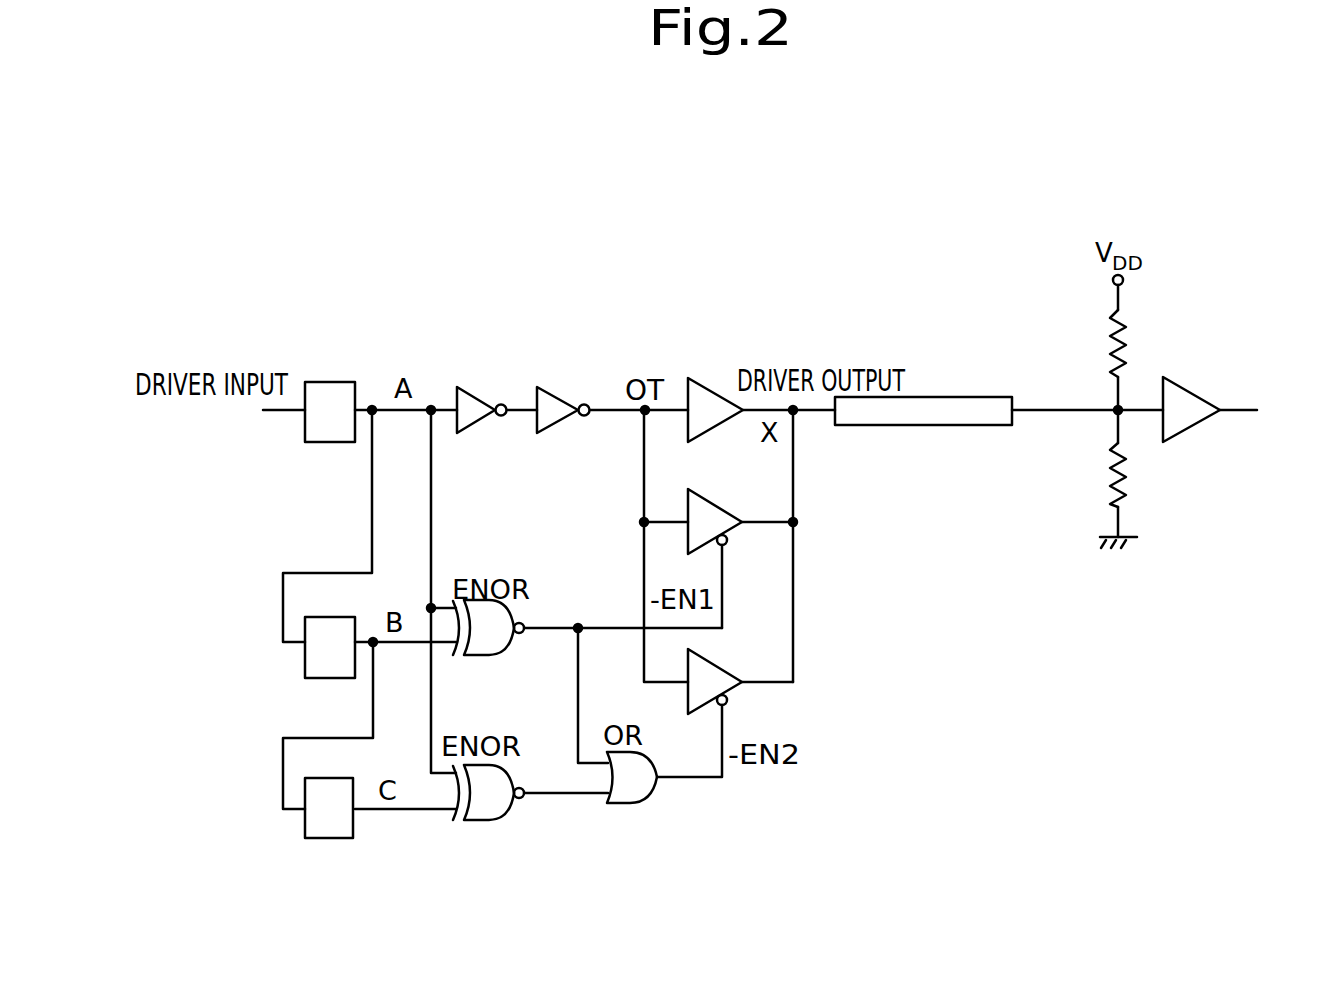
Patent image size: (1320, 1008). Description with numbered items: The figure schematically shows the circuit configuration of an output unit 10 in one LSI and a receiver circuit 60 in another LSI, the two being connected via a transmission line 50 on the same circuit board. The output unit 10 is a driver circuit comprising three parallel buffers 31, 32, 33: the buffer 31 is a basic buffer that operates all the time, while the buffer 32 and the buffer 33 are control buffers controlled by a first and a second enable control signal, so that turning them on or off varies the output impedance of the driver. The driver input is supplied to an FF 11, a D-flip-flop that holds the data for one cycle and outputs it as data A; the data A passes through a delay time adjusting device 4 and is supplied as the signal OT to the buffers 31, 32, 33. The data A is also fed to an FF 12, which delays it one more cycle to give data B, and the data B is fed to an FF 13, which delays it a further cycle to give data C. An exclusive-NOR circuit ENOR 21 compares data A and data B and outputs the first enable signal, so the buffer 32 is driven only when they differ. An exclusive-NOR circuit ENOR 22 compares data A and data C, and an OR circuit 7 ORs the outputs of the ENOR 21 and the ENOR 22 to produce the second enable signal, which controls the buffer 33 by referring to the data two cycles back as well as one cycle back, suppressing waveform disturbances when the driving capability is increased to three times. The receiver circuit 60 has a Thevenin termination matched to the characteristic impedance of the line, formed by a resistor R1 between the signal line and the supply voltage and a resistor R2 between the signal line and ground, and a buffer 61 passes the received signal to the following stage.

The output unit 10 is at (614, 262).
The FF 11 is at (341, 382).
The FF 12 is at (314, 617).
The FF 13 is at (334, 840).
The delay time adjusting device 4 is at (595, 378).
The exclusive-NOR circuit ENOR 21 is at (498, 655).
The exclusive-NOR circuit ENOR 22 is at (490, 820).
The OR circuit 7 is at (634, 803).
The buffer 31 is at (712, 378).
The buffer 32 is at (724, 512).
The buffer 33 is at (729, 672).
The transmission line 50 is at (947, 397).
The receiver circuit 60 is at (1213, 282).
The buffer 61 is at (1190, 386).
The resistor R1 is at (1110, 350).
The resistor R2 is at (1110, 486).